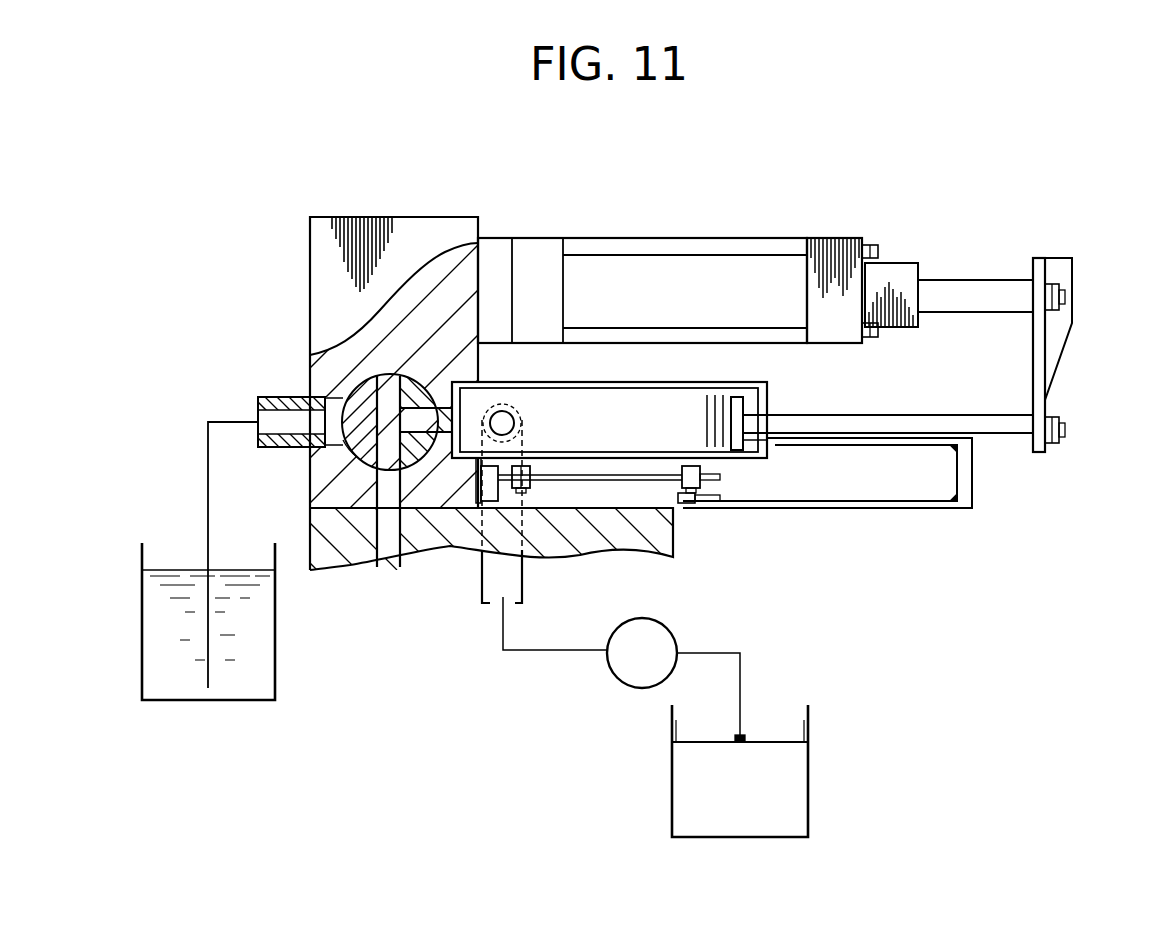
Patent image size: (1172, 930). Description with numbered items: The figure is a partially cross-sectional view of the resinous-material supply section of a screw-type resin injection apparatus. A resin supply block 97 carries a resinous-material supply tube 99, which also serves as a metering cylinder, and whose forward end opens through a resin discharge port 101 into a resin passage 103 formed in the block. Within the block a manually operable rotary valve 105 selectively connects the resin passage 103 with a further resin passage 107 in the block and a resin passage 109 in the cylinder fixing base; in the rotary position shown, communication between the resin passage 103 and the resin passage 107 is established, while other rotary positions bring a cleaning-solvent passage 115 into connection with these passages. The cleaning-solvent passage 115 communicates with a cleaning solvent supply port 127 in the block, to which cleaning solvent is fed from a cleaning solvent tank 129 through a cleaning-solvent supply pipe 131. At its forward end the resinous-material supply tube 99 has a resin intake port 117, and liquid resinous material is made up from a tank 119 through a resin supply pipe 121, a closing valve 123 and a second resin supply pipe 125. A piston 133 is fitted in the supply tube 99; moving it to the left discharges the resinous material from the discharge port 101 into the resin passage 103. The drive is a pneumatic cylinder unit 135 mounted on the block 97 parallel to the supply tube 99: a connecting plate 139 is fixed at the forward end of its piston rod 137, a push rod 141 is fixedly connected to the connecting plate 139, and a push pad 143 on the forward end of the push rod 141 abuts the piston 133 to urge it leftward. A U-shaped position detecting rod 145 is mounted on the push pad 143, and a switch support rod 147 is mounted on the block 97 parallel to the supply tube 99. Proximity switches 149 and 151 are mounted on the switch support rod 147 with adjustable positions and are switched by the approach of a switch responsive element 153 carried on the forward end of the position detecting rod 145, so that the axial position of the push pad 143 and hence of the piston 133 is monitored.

The resin supply block 97 is at (443, 237).
The resinous-material supply tube 99 is at (670, 383).
The resin discharge port 101 is at (474, 425).
The resin passage 103 is at (428, 398).
The rotary valve 105 is at (357, 445).
The resin passage 107 is at (395, 488).
The resin passage 109 is at (385, 548).
The cleaning-solvent passage 115 is at (340, 415).
The resin intake port 117 is at (505, 418).
The tank 119 is at (808, 790).
The resin supply pipe 121 is at (743, 678).
The closing valve 123 is at (662, 642).
The resin supply pipe 125 is at (558, 652).
The cleaning solvent supply port 127 is at (290, 422).
The cleaning solvent tank 129 is at (257, 667).
The cleaning-solvent supply pipe 131 is at (208, 500).
The piston 133 is at (770, 398).
The pneumatic cylinder unit 135 is at (710, 272).
The piston rod 137 is at (985, 292).
The connecting plate 139 is at (1050, 352).
The push rod 141 is at (947, 425).
The push pad 143 is at (755, 428).
The position detecting rod 145 is at (882, 510).
The switch support rod 147 is at (623, 477).
The proximity switch 149 is at (712, 470).
The proximity switch 151 is at (530, 468).
The switch responsive element 153 is at (685, 507).